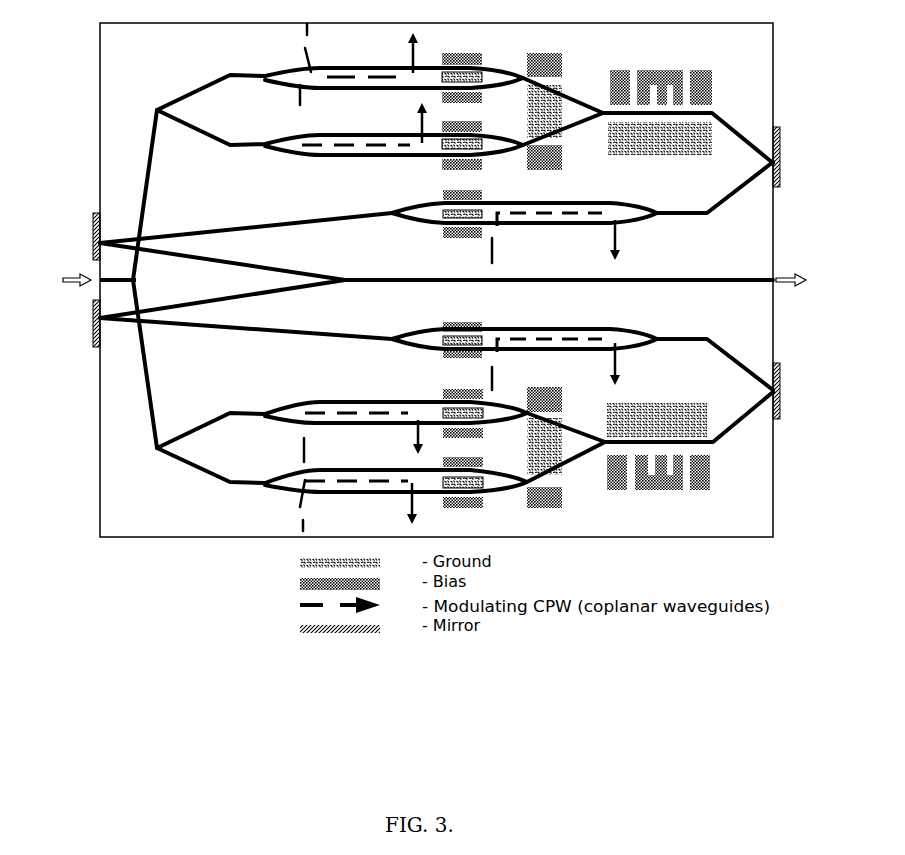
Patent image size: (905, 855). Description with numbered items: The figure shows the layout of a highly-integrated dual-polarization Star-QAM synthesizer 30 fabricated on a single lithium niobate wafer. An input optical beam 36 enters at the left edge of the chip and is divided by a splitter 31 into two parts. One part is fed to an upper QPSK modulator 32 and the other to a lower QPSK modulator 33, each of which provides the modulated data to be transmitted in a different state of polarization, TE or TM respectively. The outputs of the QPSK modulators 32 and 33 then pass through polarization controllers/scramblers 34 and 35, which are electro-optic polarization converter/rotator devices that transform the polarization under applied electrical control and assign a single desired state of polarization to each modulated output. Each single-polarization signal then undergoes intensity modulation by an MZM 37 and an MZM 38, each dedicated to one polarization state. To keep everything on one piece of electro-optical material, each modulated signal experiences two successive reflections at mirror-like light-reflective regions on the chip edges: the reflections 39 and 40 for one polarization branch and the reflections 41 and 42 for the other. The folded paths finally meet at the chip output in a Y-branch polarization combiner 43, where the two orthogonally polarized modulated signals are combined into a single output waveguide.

The synthesizer 30 is at (436, 280).
The splitter 31 is at (146, 279).
The QPSK modulator 32 is at (359, 104).
The QPSK modulator 33 is at (359, 453).
The polarization controller/scrambler 34 is at (673, 112).
The polarization controller/scrambler 35 is at (670, 446).
The input optical beam 36 is at (81, 280).
The MZM 37 is at (530, 218).
The MZM 38 is at (535, 343).
The reflection 39 is at (790, 157).
The reflection 40 is at (80, 233).
The reflection 41 is at (792, 391).
The reflection 42 is at (76, 323).
The Y-branch polarization combiner 43 is at (792, 263).